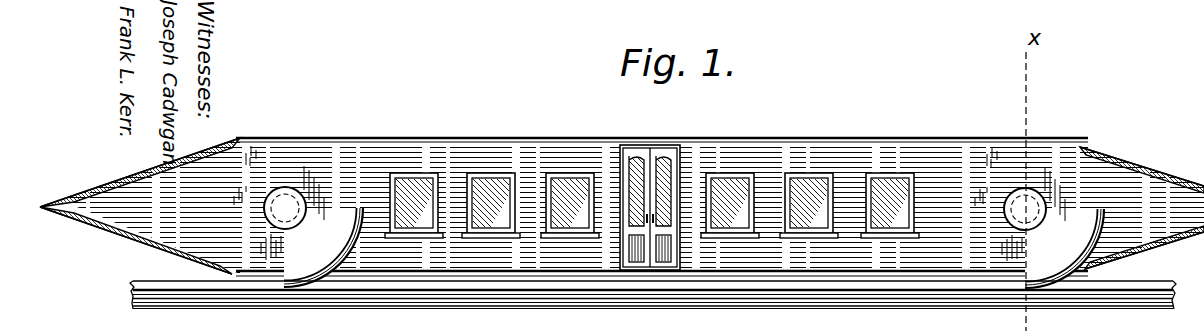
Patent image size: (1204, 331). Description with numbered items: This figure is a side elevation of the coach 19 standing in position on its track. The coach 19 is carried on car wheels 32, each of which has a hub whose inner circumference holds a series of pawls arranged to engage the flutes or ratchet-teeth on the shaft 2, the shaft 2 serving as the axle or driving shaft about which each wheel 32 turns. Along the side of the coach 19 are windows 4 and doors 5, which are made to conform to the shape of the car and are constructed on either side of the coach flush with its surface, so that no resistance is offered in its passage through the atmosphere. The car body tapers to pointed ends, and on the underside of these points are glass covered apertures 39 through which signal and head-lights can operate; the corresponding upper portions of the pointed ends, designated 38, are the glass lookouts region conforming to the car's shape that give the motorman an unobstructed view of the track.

The shaft 2 is at (286, 206).
The windows 4 is at (480, 184).
The doors 5 is at (663, 153).
The coach 19 is at (543, 147).
The car wheel 32 is at (275, 140).
The upper runner of pointed end 38 is at (118, 176).
The glass covered apertures 39 is at (128, 239).